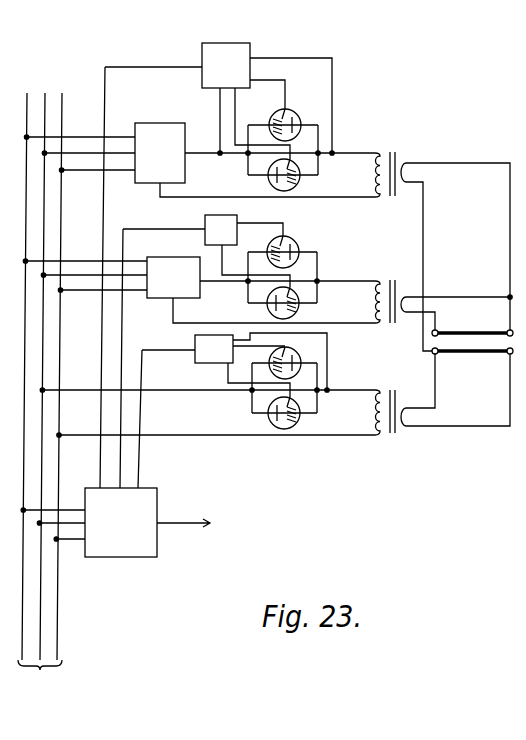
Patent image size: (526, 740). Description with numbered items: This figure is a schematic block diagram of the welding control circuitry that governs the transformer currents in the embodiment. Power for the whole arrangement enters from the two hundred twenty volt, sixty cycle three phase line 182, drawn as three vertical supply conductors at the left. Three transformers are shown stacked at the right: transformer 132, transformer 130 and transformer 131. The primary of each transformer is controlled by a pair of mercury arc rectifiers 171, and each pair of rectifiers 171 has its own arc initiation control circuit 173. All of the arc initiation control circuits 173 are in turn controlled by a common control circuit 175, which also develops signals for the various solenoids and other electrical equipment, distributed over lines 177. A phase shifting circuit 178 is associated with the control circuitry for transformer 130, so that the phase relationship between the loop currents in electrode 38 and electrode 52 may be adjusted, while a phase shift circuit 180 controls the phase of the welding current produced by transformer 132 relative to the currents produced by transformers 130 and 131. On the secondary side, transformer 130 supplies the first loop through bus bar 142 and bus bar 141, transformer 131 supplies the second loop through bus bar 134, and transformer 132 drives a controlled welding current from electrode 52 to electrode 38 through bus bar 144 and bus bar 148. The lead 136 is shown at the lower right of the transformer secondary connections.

The electrode 38 is at (480, 338).
The electrode 52 is at (492, 353).
The transformer 130 is at (389, 280).
The transformer 131 is at (391, 438).
The transformer 132 is at (396, 152).
The bus bar 134 is at (437, 401).
The conductor 136 is at (490, 428).
The bus bar 141 is at (440, 323).
The bus bar 142 is at (460, 291).
The bus bar 144 is at (425, 228).
The bus bar 148 is at (497, 155).
The mercury arc rectifier 171 is at (291, 112).
The arc initiation control circuit 173 is at (238, 50).
The common control circuit 175 is at (138, 548).
The lines 177 is at (187, 522).
The phase shifting circuit 178 is at (178, 247).
The phase shift circuit 180 is at (165, 127).
The three phase line 182 is at (40, 397).